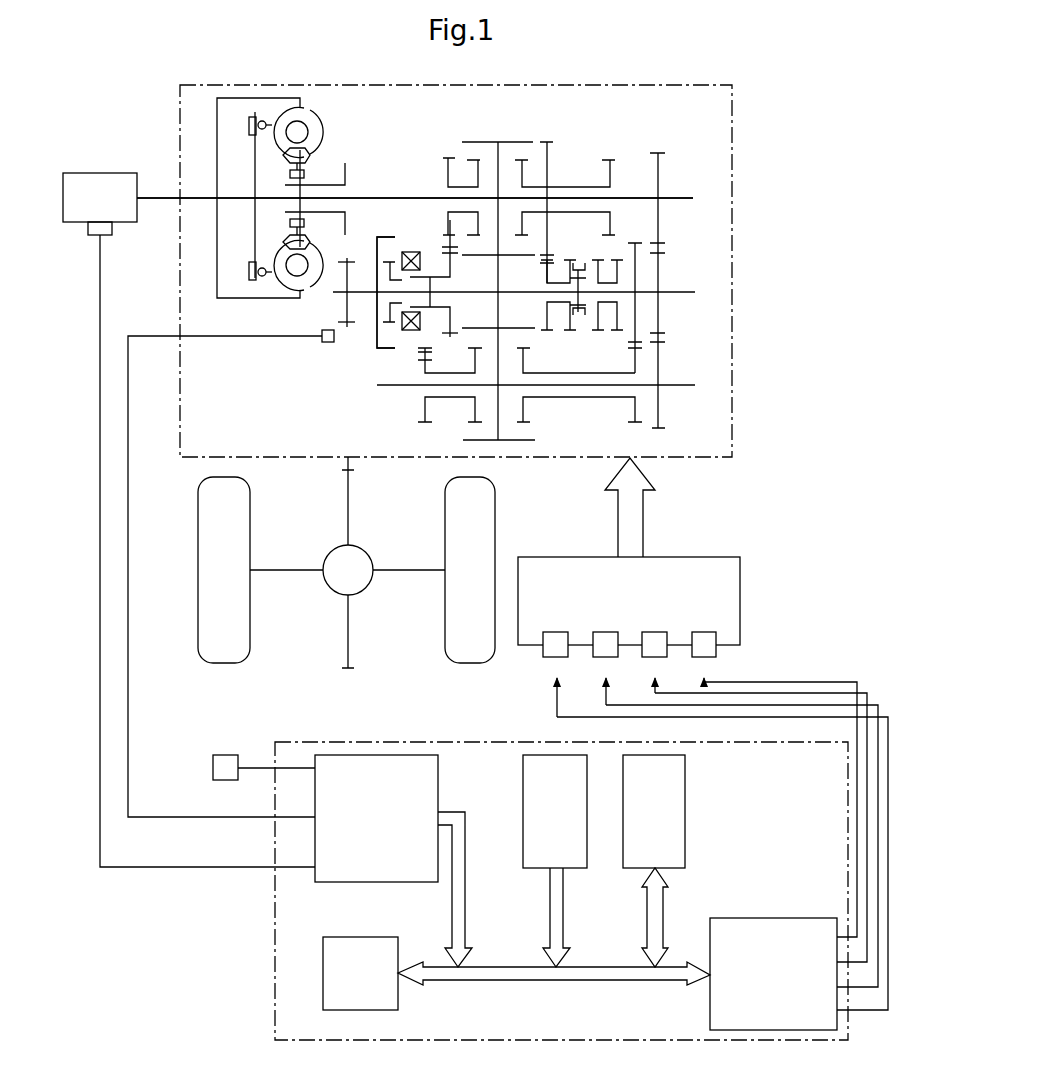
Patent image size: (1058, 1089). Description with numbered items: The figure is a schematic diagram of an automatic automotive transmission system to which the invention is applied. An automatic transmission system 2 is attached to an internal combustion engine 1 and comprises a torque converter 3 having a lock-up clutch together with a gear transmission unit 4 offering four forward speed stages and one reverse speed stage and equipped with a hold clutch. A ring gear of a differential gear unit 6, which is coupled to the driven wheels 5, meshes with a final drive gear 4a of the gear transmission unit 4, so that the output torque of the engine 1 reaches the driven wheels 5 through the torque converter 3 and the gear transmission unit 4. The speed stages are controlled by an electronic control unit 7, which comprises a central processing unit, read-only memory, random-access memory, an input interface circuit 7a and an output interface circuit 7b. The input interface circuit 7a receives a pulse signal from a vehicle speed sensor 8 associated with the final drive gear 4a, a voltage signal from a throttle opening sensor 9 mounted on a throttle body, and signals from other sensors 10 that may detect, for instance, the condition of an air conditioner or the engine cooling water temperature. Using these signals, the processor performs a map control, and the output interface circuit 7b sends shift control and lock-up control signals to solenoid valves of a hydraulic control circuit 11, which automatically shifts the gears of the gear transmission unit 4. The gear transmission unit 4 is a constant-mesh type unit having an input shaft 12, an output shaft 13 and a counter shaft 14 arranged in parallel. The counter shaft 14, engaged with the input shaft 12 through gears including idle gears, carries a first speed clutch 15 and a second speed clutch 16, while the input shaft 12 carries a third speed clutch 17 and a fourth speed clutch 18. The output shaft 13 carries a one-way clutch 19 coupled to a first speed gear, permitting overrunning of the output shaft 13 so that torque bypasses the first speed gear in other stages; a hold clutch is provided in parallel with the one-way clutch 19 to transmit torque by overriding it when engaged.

The internal combustion engine 1 is at (100, 173).
The automatic transmission system 2 is at (732, 290).
The torque converter 3 is at (326, 129).
The gear transmission unit 4 is at (558, 130).
The final drive gear 4a is at (345, 300).
The driven wheels 5 is at (250, 637).
The differential gear unit 6 is at (367, 553).
The control unit 7 is at (410, 742).
The input interface circuit 7a is at (438, 775).
The output interface circuit 7b is at (735, 918).
The vehicle speed sensor 8 is at (330, 343).
The throttle opening sensor 9 is at (112, 228).
The other sensors 10 is at (213, 770).
The hydraulic control circuit 11 is at (740, 583).
The input shaft 12 is at (693, 198).
The output shaft 13 is at (695, 292).
The counter shaft 14 is at (695, 385).
The first speed clutch 15 is at (460, 433).
The second speed clutch 16 is at (540, 433).
The third speed clutch 17 is at (471, 138).
The fourth speed clutch 18 is at (515, 138).
The one-way clutch 19 is at (406, 248).